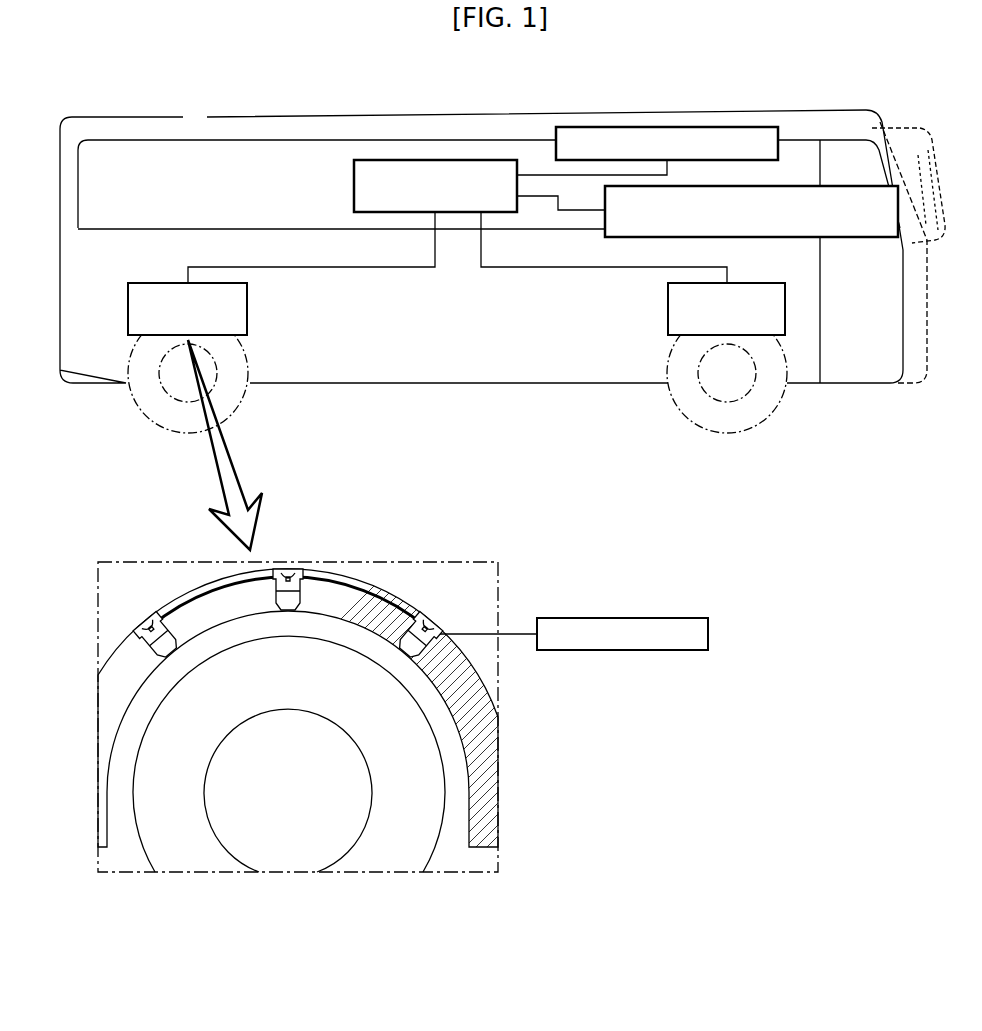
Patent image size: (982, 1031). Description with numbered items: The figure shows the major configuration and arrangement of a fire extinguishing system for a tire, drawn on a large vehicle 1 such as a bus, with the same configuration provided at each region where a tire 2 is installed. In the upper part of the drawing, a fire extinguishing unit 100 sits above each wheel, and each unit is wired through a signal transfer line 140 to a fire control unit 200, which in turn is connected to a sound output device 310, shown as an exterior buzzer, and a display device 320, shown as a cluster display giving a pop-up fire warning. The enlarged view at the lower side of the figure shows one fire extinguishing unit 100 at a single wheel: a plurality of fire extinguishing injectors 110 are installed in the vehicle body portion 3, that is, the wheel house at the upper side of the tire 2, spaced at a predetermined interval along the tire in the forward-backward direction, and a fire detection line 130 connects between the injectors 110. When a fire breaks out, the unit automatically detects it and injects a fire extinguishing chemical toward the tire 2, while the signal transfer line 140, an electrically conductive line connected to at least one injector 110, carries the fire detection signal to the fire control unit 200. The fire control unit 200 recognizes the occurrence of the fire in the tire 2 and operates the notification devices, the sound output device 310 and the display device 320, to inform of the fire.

The vehicle 1 is at (233, 115).
The tire 2 is at (425, 778).
The vehicle body portion 3 is at (463, 692).
The fire extinguishing unit 100 is at (247, 315).
The fire extinguishing injector 110 is at (124, 620).
The fire detection line 130 is at (372, 590).
The signal transfer line 140 is at (385, 267).
The fire control unit (FCU) 200 is at (450, 160).
The sound output device 310 is at (665, 127).
The display device 320 is at (790, 186).